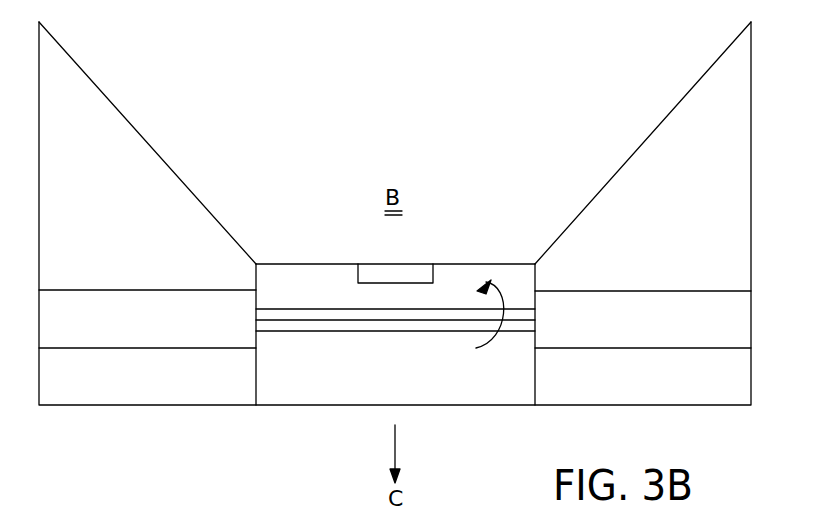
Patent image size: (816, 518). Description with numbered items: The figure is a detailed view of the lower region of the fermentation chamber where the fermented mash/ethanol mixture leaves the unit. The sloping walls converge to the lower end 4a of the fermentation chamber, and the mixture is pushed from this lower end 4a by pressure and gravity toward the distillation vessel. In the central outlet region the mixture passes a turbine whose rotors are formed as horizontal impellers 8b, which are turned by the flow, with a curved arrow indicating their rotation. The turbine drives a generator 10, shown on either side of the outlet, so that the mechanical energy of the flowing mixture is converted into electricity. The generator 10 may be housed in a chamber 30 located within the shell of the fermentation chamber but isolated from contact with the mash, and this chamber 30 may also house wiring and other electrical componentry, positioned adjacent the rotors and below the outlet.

The lower end of fermentation chamber 4a is at (165, 162).
The generator 10 is at (155, 290).
The horizontal impellers 8b is at (372, 332).
The chamber 30 is at (417, 213).